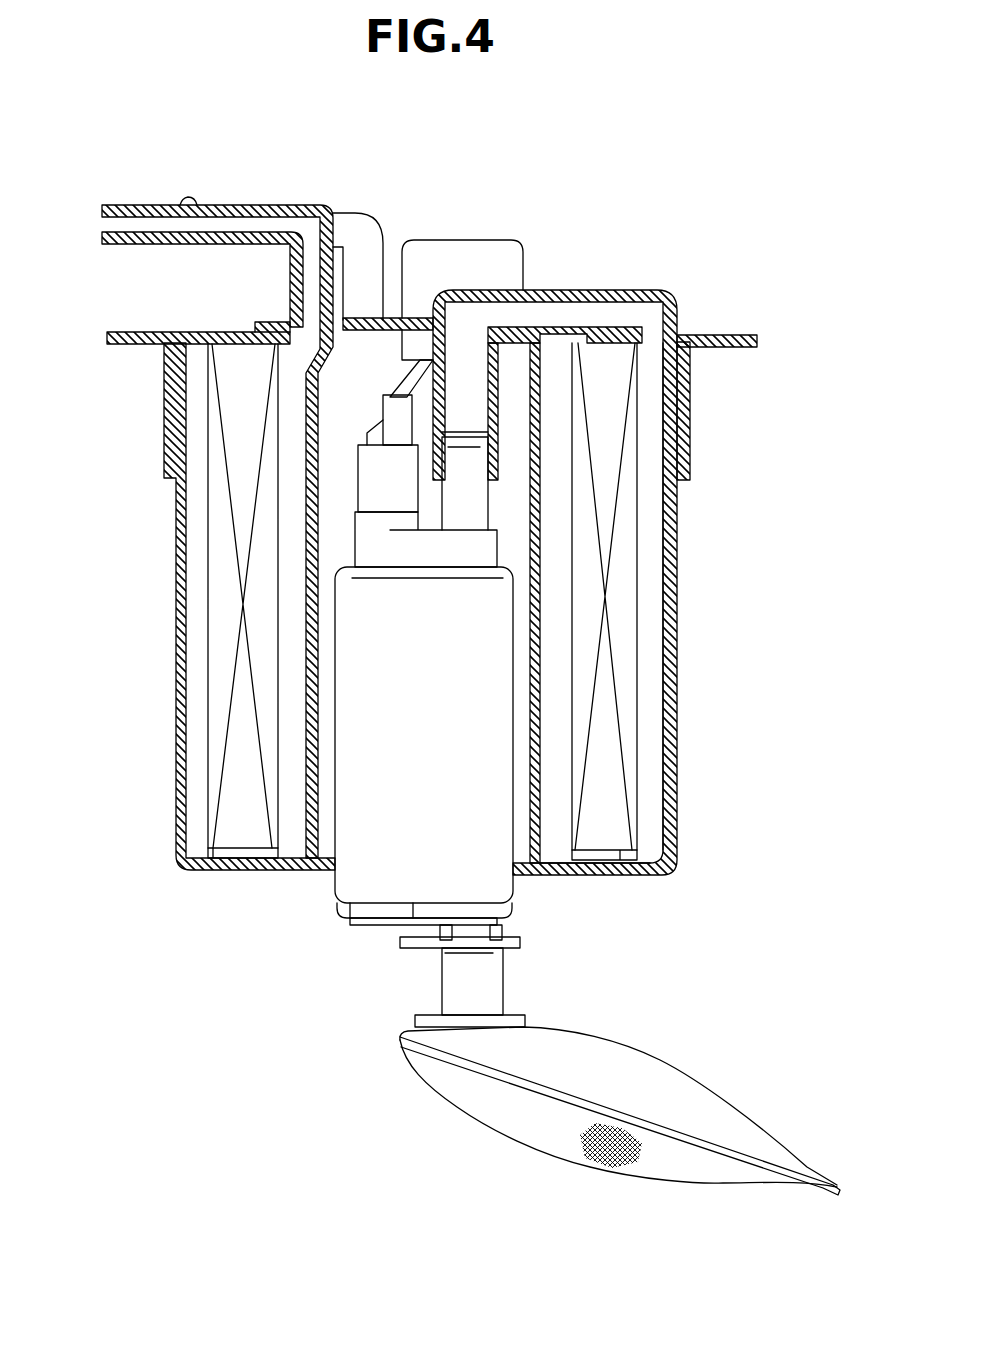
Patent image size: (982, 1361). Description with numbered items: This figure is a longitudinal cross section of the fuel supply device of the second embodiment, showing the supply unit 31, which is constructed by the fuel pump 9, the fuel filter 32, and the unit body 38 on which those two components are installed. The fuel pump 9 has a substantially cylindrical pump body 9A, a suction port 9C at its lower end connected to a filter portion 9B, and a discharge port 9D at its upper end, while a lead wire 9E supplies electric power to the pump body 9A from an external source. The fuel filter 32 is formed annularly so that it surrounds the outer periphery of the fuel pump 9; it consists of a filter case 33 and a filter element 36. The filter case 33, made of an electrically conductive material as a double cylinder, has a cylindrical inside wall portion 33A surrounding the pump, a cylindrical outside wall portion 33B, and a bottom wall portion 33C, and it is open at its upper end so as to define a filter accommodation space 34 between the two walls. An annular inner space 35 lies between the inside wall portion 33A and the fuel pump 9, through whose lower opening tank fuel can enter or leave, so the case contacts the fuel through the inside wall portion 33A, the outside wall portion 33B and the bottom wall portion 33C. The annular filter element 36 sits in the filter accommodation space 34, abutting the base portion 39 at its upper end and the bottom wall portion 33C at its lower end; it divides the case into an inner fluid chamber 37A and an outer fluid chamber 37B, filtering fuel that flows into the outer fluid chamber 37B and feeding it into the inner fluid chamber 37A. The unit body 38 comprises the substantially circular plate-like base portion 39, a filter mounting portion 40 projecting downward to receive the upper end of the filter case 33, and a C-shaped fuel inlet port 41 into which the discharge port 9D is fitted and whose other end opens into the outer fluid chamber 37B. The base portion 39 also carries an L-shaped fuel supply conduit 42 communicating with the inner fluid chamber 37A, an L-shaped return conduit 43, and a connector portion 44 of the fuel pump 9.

The fuel pump 9 is at (373, 868).
The pump body 9A is at (395, 882).
The filter portion 9B is at (455, 1096).
The suction port 9C is at (488, 996).
The discharge port 9D is at (397, 417).
The lead wire 9E is at (405, 363).
The supply unit 31 is at (614, 214).
The fuel filter 32 is at (166, 741).
The filter case 33 is at (172, 828).
The inside wall portion 33A is at (535, 676).
The outside wall portion 33B is at (670, 512).
The bottom wall portion 33C is at (593, 875).
The filter accommodation space 34 is at (650, 815).
The inner space 35 is at (320, 645).
The filter element 36 is at (610, 743).
The inner fluid chamber 37A is at (290, 530).
The outer fluid chamber 37B is at (650, 590).
The unit body 38 is at (678, 288).
The base portion 39 is at (188, 330).
The filter mounting portion 40 is at (682, 424).
The fuel inlet port 41 is at (500, 358).
The fuel supply conduit 42 is at (134, 204).
The return conduit 43 is at (348, 224).
The connector portion 44 is at (475, 250).